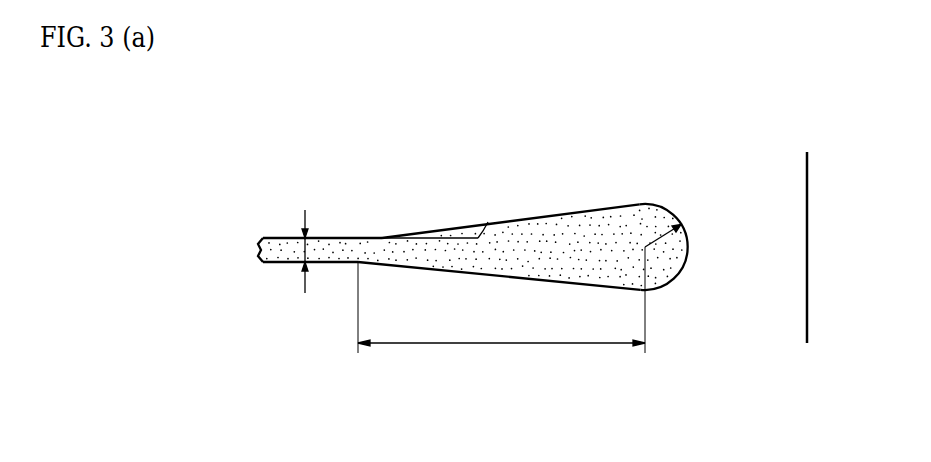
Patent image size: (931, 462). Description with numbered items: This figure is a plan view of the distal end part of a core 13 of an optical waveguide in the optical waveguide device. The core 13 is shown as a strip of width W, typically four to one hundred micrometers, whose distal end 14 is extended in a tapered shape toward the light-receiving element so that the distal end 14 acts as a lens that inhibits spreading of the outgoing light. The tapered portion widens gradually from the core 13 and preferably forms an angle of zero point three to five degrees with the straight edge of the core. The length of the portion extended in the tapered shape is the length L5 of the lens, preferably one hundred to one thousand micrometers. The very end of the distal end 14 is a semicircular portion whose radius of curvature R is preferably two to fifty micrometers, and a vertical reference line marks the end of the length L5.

The core 13 is at (598, 208).
The distal end 14 is at (690, 248).
The radius of curvature R is at (661, 283).
The width W is at (305, 238).
The length of a lens L5 is at (501, 307).